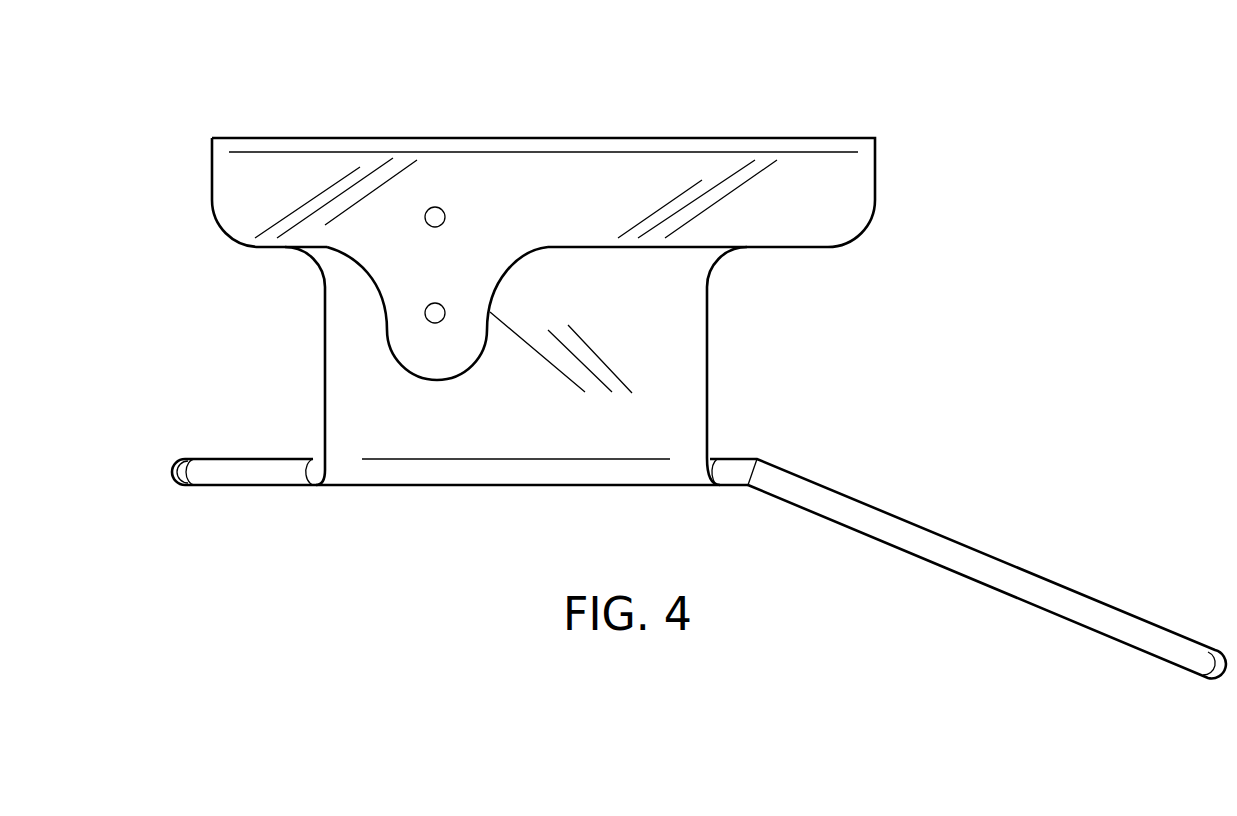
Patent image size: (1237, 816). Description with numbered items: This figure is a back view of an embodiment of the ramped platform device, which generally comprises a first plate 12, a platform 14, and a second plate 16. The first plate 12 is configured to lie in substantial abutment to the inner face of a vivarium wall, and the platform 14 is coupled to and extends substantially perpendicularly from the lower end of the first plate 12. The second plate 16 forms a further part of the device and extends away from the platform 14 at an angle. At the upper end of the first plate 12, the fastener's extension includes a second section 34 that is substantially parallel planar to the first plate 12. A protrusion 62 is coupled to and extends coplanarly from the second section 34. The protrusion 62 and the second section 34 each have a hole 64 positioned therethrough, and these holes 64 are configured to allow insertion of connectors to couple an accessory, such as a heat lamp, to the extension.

The first plate 12 is at (360, 388).
The platform 14 is at (260, 472).
The second plate 16 is at (990, 563).
The second section 34 is at (810, 190).
The protrusion 62 is at (418, 360).
The hole 64 is at (432, 207).